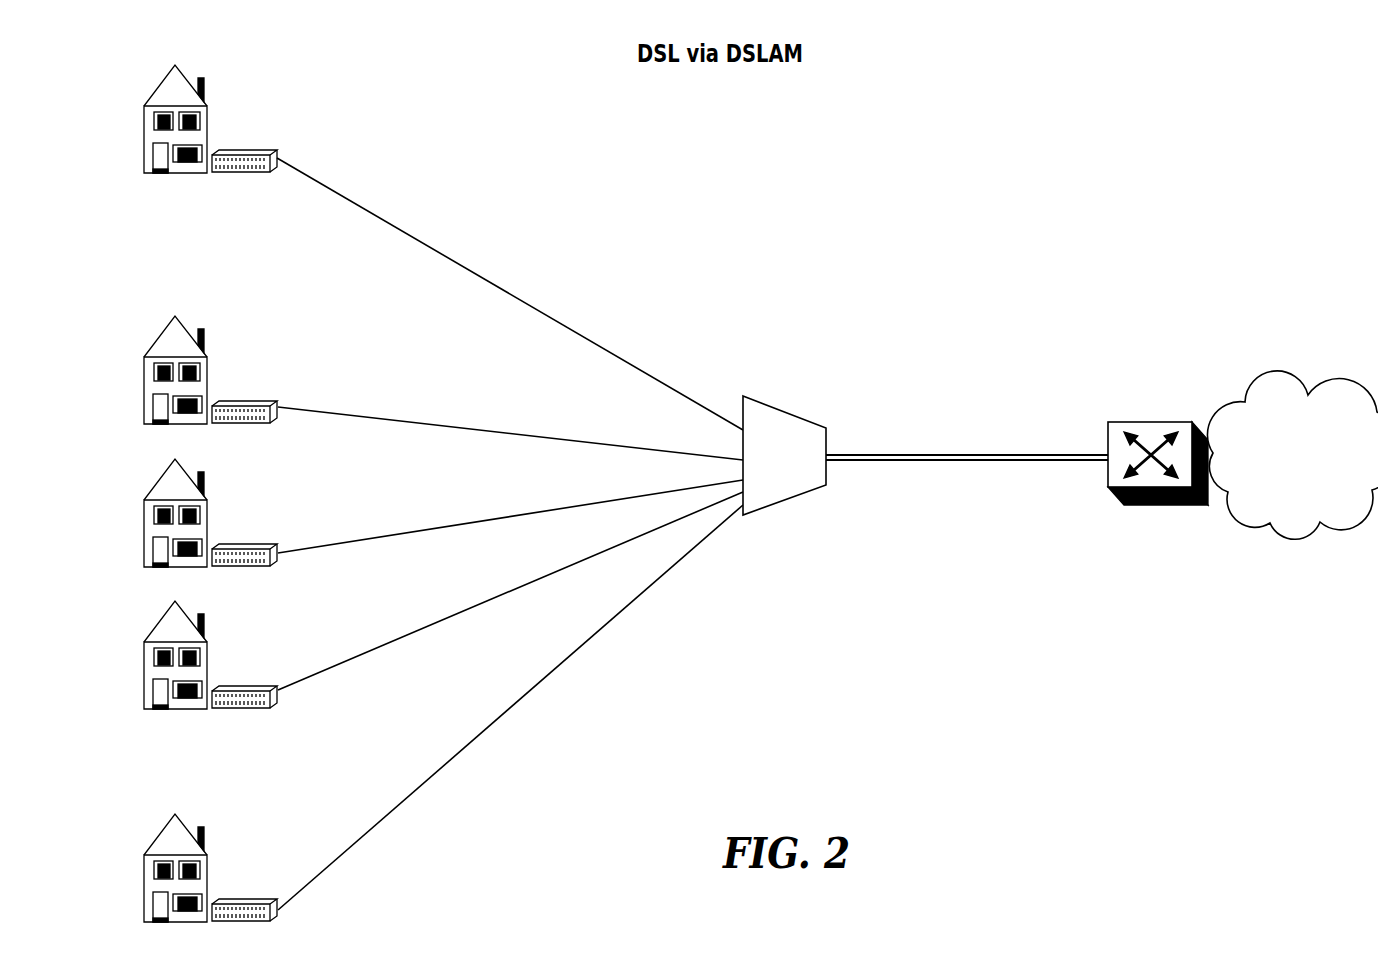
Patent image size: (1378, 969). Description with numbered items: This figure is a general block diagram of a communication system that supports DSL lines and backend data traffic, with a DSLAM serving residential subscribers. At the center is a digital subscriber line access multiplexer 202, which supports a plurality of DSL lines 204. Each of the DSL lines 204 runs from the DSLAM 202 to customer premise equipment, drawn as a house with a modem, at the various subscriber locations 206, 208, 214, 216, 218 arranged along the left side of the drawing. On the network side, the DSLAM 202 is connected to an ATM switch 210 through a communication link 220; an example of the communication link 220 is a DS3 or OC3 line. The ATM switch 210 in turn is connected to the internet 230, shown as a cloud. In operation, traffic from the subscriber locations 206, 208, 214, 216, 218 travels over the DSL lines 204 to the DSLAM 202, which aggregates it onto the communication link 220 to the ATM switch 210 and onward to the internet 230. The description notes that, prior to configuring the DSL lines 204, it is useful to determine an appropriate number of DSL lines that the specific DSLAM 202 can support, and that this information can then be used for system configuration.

The digital subscriber line access multiplexer 202 is at (780, 408).
The DSL lines 204 is at (497, 285).
The subscriber location 206 is at (183, 73).
The subscriber location 208 is at (185, 325).
The ATM switch 210 is at (1155, 507).
The subscriber location 214 is at (192, 475).
The subscriber location 216 is at (195, 615).
The subscriber location 218 is at (195, 830).
The communication link 220 is at (970, 455).
The internet 230 is at (1289, 375).